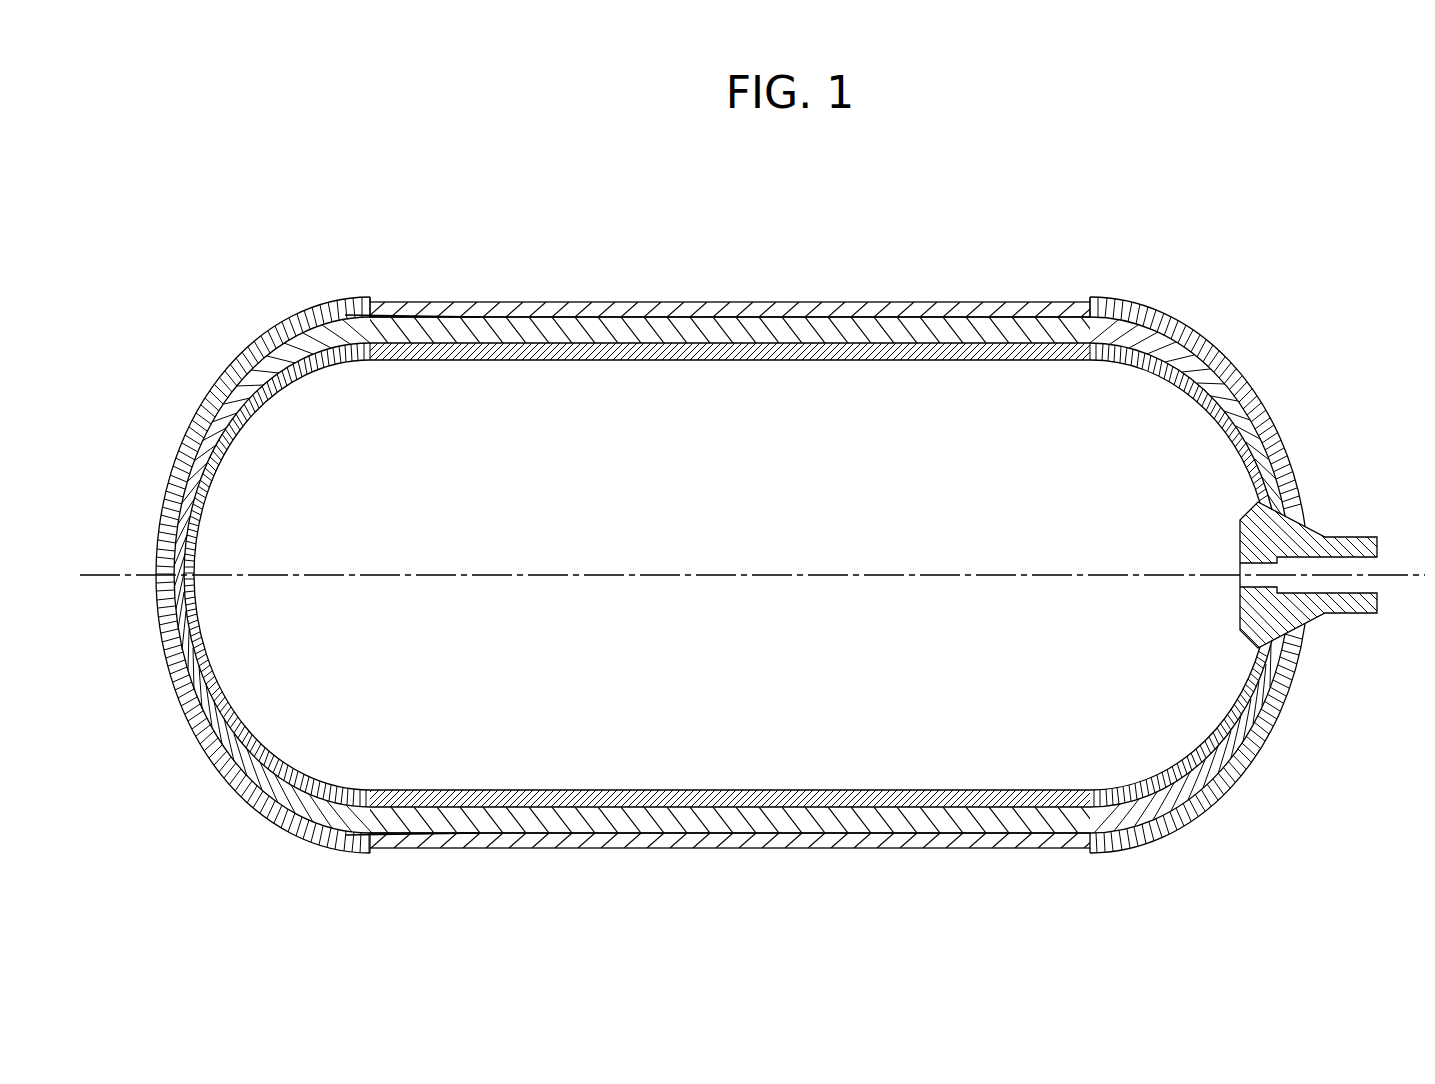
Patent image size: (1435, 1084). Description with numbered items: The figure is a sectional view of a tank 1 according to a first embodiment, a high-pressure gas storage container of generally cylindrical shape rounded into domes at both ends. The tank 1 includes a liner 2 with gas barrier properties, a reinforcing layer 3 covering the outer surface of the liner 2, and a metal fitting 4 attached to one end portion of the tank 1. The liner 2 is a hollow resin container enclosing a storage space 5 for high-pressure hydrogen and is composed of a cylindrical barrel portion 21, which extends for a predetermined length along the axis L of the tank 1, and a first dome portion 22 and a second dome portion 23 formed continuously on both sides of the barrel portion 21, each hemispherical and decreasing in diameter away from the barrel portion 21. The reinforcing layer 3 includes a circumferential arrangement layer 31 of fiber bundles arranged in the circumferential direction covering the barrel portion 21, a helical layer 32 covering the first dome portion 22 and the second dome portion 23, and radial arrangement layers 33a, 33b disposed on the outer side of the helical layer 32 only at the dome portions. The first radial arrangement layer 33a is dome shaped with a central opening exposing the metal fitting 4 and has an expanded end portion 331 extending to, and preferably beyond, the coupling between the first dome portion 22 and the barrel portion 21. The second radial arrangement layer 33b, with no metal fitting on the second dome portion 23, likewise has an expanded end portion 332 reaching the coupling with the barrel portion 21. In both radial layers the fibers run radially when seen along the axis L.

The tank 1 is at (975, 225).
The liner 2 is at (666, 360).
The barrel portion 21 is at (768, 361).
The first dome portion 22 is at (1207, 410).
The second dome portion 23 is at (240, 408).
The reinforcing layer 3 is at (720, 300).
The circumferential arrangement layer 31 is at (876, 335).
The helical layer 32 is at (590, 301).
The first radial arrangement layer 33a is at (1262, 396).
The second radial arrangement layer 33b is at (228, 384).
The expanded end portion 331 is at (1088, 297).
The expanded end portion 332 is at (373, 294).
The metal fitting 4 is at (1355, 536).
The storage space 5 is at (752, 716).
The axis L is at (1422, 573).